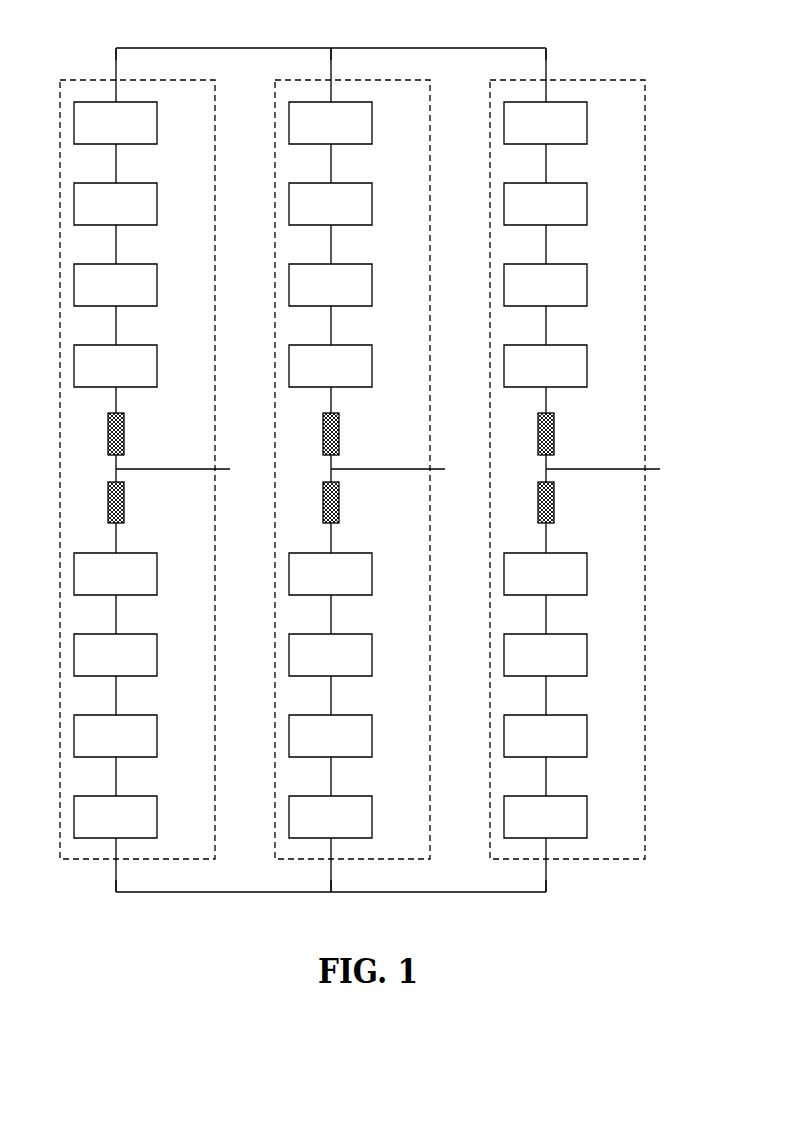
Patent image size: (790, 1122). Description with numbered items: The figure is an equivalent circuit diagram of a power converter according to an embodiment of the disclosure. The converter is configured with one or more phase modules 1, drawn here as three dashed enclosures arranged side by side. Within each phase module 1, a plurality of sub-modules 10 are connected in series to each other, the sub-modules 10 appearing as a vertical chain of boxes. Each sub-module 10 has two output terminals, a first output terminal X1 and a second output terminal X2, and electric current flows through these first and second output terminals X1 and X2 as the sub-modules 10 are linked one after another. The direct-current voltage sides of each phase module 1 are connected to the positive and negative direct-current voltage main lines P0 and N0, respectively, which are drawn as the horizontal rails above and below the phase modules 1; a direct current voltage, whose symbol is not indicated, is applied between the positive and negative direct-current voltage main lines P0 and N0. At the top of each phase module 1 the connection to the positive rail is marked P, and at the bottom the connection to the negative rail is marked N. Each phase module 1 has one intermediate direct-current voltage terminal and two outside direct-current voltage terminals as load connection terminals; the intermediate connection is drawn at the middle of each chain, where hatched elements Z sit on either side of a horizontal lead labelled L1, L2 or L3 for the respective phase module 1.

The phase module 1 is at (665, 232).
The sub-module 10 is at (606, 810).
The impedance element Z is at (568, 494).
The first output terminal X1 is at (564, 779).
The second output terminal X2 is at (116, 844).
The first tap line L1 is at (183, 470).
The second tap line L2 is at (398, 470).
The third tap line L3 is at (613, 470).
The positive terminal P is at (330, 45).
The positive direct-current voltage main line P0 is at (217, 48).
The negative terminal N is at (330, 896).
The negative direct-current voltage main line N0 is at (215, 892).